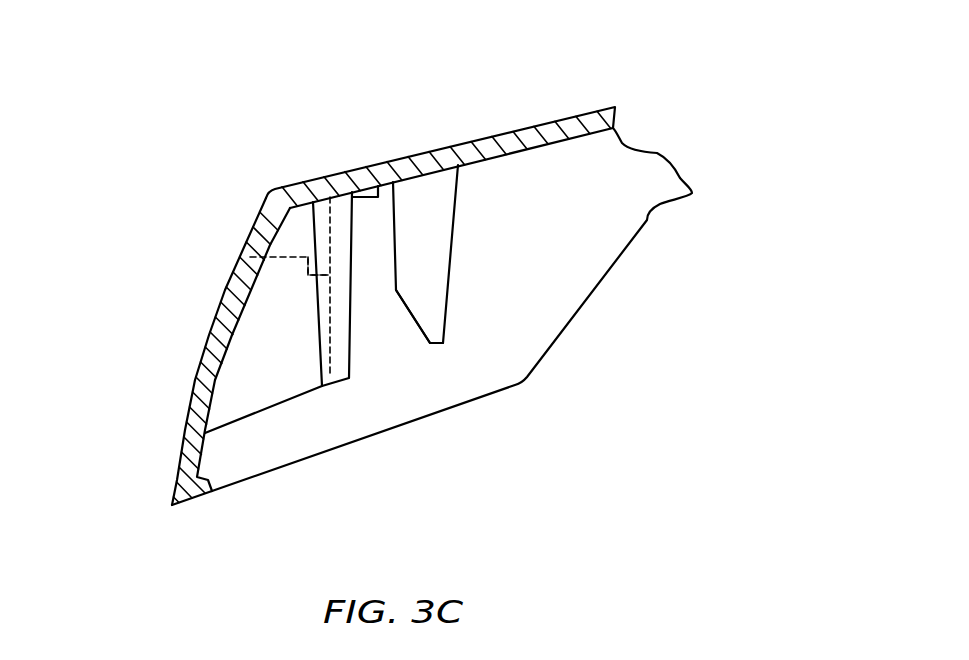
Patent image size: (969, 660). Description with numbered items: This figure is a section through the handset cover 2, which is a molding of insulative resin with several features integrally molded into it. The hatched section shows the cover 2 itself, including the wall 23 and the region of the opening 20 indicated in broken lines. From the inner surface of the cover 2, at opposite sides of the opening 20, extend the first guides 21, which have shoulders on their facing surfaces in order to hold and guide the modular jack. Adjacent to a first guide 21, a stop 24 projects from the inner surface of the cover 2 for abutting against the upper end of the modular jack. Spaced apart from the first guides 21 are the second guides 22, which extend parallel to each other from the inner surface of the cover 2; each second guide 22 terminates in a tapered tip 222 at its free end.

The handset cover 2 is at (575, 115).
The opening 20 is at (233, 300).
The first guides 21 is at (338, 213).
The second guides 22 is at (435, 185).
The tapered tip 222 is at (418, 333).
The wall 23 is at (313, 275).
The stop 24 is at (368, 190).